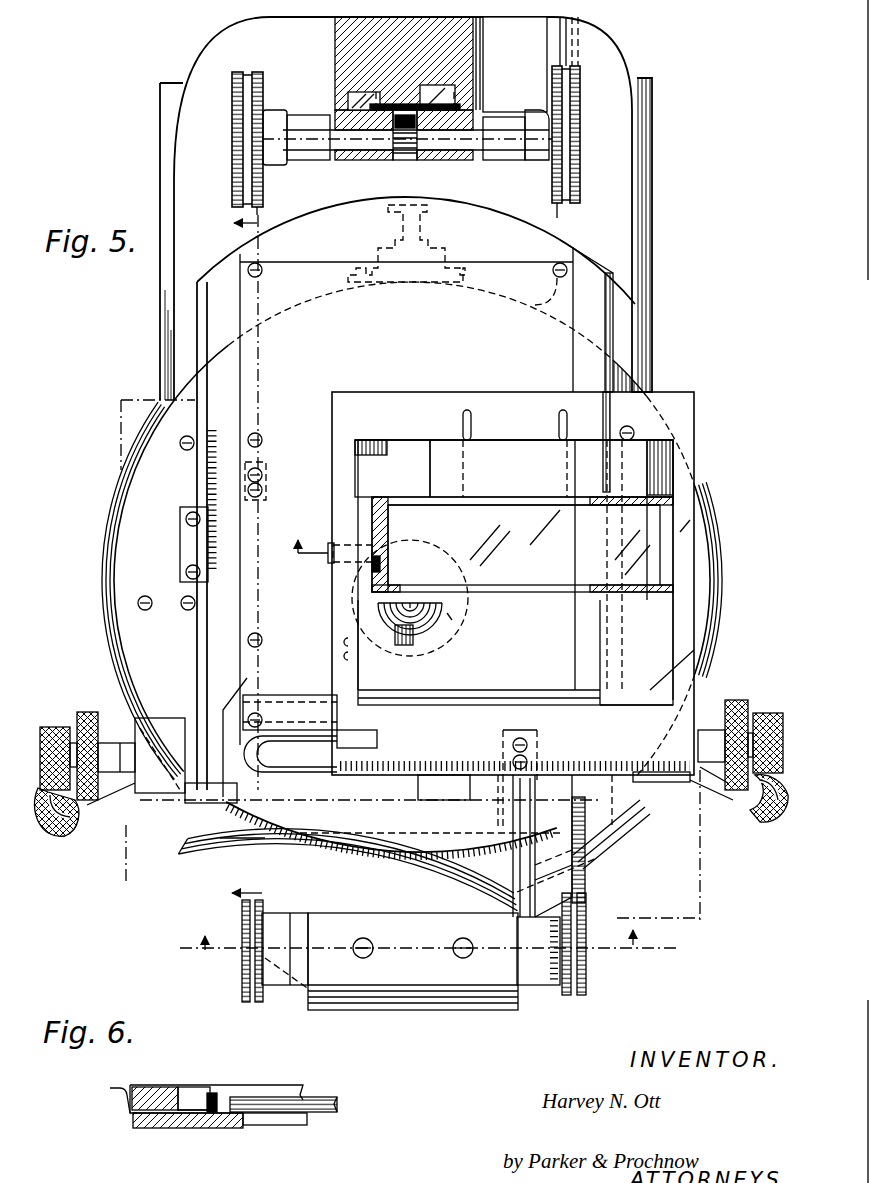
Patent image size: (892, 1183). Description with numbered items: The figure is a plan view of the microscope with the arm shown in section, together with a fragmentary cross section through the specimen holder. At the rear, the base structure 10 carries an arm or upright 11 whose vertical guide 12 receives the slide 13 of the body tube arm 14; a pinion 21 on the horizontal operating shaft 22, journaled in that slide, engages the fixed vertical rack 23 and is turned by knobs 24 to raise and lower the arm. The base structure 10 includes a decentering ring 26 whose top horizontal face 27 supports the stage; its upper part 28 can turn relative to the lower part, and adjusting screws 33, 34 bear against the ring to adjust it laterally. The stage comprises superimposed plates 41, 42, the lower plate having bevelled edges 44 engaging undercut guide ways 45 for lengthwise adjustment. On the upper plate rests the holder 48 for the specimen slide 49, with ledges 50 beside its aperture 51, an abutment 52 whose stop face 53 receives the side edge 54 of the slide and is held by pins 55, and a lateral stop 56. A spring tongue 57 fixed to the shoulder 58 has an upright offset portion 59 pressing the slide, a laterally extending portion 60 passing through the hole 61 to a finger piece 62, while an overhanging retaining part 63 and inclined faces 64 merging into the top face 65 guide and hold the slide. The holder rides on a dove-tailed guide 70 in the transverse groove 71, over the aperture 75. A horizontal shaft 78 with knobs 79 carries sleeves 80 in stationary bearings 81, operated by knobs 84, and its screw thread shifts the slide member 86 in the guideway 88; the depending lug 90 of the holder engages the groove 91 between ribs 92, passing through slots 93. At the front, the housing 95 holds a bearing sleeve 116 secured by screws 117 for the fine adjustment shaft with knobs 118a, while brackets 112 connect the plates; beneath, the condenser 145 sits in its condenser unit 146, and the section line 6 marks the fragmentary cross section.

In FIG. 5, the base structure 10 is at (410, 494).
In FIG. 5, the arm or upright 11 is at (462, 34).
In FIG. 5, the vertical guide 12 is at (368, 92).
In FIG. 5, the slide 13 is at (462, 103).
In FIG. 5, the body tube arm 14 is at (229, 562).
In FIG. 5, the pinion 21 is at (408, 140).
In FIG. 5, the horizontal operating shaft 22 is at (345, 138).
In FIG. 5, the vertical rack 23 is at (458, 77).
In FIG. 5, the knobs 24 is at (236, 116).
In FIG. 5, the decentering ring 26 is at (120, 520).
In FIG. 5, the top horizontal face 27 is at (367, 856).
In FIG. 5, the upper ring part 28 is at (125, 480).
In FIG. 5, the adjusting screw 33 is at (428, 228).
In FIG. 5, the adjusting screw 34 is at (130, 797).
In FIG. 5, the upper stage plate 41 is at (368, 333).
In FIG. 5, the lower stage plate 42 is at (212, 325).
In FIG. 5, the bevelled edges 44 is at (610, 330).
In FIG. 5, the undercut guide ways 45 is at (698, 452).
In FIG. 5, the holder 48 is at (695, 403).
In FIG. 6, the holder 48 is at (133, 1122).
In FIG. 5, the specimen slide 49 is at (522, 544).
In FIG. 6, the specimen slide 49 is at (325, 1100).
In FIG. 5, the horizontal ledges 50 is at (521, 646).
In FIG. 6, the horizontal ledges 50 is at (235, 1115).
In FIG. 5, the aperture 51 is at (405, 455).
In FIG. 6, the aperture 51 is at (200, 1086).
In FIG. 5, the abutment 52 is at (514, 565).
In FIG. 5, the stop face 53 is at (488, 513).
In FIG. 5, the side edge 54 is at (524, 525).
In FIG. 5, the pins 55 is at (559, 418).
In FIG. 5, the lateral stop or shoulder 56 is at (632, 586).
In FIG. 5, the spring tongue 57 is at (363, 590).
In FIG. 6, the spring tongue 57 is at (197, 1115).
In FIG. 5, the vertical face or shoulder 58 is at (355, 653).
In FIG. 6, the vertical face or shoulder 58 is at (185, 1090).
In FIG. 5, the upright offset portion 59 is at (368, 548).
In FIG. 6, the upright offset portion 59 is at (218, 1096).
In FIG. 5, the laterally extending portion 60 is at (332, 532).
In FIG. 6, the laterally extending portion 60 is at (145, 1128).
In FIG. 6, the hole 61 is at (150, 1105).
In FIG. 5, the finger piece 62 is at (330, 564).
In FIG. 6, the finger piece 62 is at (110, 1088).
In FIG. 5, the overhanging retaining part 63 is at (682, 530).
In FIG. 5, the inclined faces 64 is at (402, 678).
In FIG. 5, the top face of the holder 65 is at (677, 717).
In FIG. 5, the dove-tailed guide 70 is at (290, 712).
In FIG. 5, the transverse groove 71 is at (357, 742).
In FIG. 5, the aperture 75 is at (463, 614).
In FIG. 5, the horizontal shaft 78 is at (72, 733).
In FIG. 5, the operating knobs 79 is at (48, 728).
In FIG. 5, the sleeve 80 is at (110, 743).
In FIG. 5, the stationary bearing 81 is at (673, 802).
In FIG. 5, the operating knobs 84 is at (70, 730).
In FIG. 5, the slide or member 86 is at (482, 863).
In FIG. 5, the undercut groove or guideway 88 is at (605, 822).
In FIG. 5, the depending lug 90 is at (518, 738).
In FIG. 5, the longitudinal groove 91 is at (527, 900).
In FIG. 5, the ribs or walls 92 is at (473, 876).
In FIG. 5, the transverse slots 93 is at (328, 738).
In FIG. 5, the housing 95 is at (390, 961).
In FIG. 5, the lug or bracket 112 is at (258, 458).
In FIG. 5, the bearing sleeve 116 is at (302, 975).
In FIG. 5, the screws 117 is at (452, 940).
In FIG. 5, the operating knob 118a is at (247, 983).
In FIG. 5, the condenser 145 is at (447, 614).
In FIG. 5, the condenser unit 146 is at (533, 643).
In FIG. 5, the section line 6 is at (302, 552).